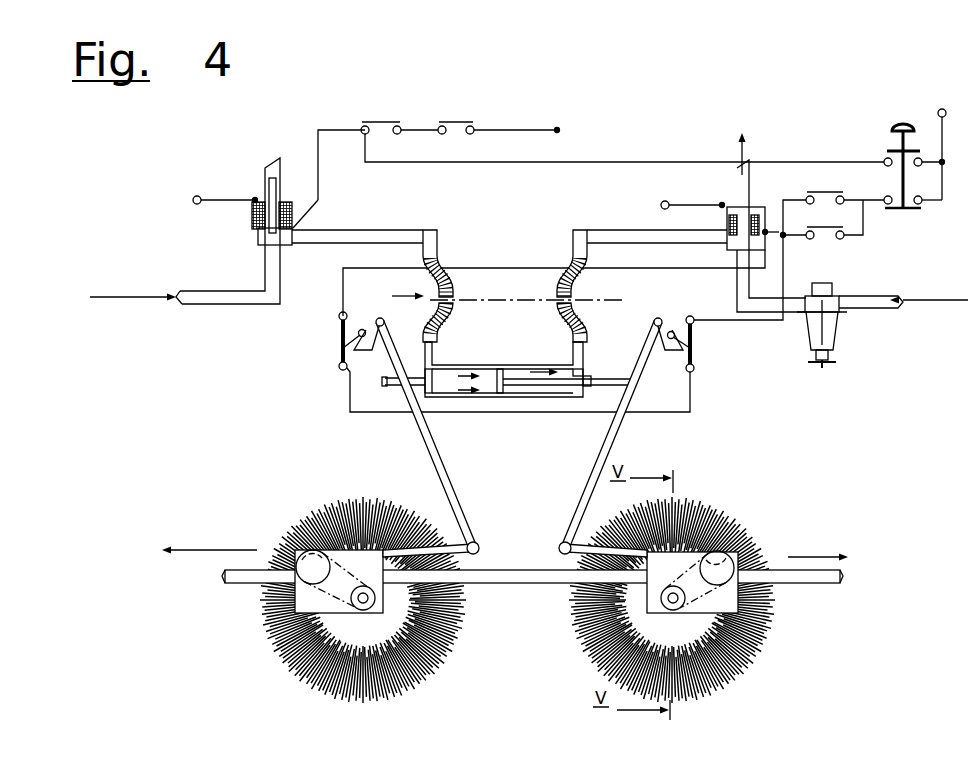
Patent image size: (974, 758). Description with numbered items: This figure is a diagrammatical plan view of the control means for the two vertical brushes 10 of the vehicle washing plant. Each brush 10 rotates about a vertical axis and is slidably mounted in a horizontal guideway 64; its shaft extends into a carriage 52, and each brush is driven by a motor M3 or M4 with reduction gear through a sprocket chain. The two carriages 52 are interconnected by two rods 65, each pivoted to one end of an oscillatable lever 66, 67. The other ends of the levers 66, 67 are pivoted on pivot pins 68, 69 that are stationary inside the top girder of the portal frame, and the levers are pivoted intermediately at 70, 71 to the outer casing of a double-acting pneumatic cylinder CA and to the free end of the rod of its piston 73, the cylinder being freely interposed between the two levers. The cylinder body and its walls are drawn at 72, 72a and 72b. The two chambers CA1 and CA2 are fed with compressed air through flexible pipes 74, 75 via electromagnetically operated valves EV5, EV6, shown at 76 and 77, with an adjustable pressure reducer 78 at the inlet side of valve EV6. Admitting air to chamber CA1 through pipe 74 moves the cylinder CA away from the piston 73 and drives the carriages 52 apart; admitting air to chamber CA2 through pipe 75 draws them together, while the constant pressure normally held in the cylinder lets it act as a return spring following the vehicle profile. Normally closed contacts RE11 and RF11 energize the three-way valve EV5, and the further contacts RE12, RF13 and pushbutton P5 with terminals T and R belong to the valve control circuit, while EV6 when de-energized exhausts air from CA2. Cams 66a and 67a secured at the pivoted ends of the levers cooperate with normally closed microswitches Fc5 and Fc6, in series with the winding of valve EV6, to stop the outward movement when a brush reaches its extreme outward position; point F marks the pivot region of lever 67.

The vertical brush 10 is at (276, 652).
The carriage 52 is at (343, 556).
The horizontal guideway 64 is at (808, 537).
The rod 65 is at (428, 545).
The oscillatable lever 66 is at (420, 431).
The cam 66a is at (374, 352).
The oscillatable lever 67 is at (608, 436).
The cam 67a is at (650, 342).
The pivot pin 68 is at (380, 316).
The pivot pin 69 is at (652, 324).
The intermediate pivot 70 is at (405, 376).
The intermediate pivot 71 is at (638, 383).
The pneumatic cylinder 72 is at (473, 350).
The left cylinder wall 72a is at (443, 398).
The right cylinder wall 72b is at (564, 398).
The piston 73 is at (500, 400).
The flexible pipe 74 is at (433, 245).
The flexible pipe 75 is at (572, 245).
The left solenoid valve 76 is at (260, 184).
The right solenoid valve 77 is at (760, 200).
The adjustable pressure reducer 78 is at (837, 337).
The electromagnetically operated valve EV5 is at (242, 212).
The electromagnetically operated valve EV6 is at (719, 225).
The contact RE11 is at (378, 149).
The contact RF11 is at (496, 116).
The relay contact RF13 is at (789, 247).
The relay contact RE12 is at (822, 219).
The pushbutton P5 is at (913, 157).
The microswitch Fc5 is at (491, 362).
The microswitch Fc6 is at (695, 344).
The motor M3 is at (713, 550).
The motor M4 is at (298, 548).
The pneumatic cylinder CA is at (524, 361).
The cylinder chamber CA1 is at (462, 384).
The cylinder chamber CA2 is at (550, 394).
The fixed point F is at (652, 302).
The terminal R is at (691, 193).
The terminal T is at (751, 145).